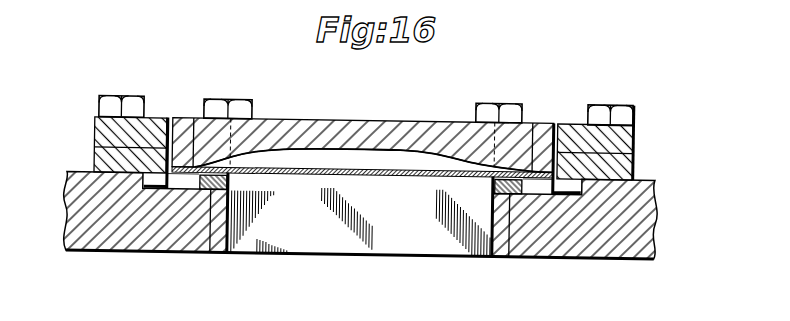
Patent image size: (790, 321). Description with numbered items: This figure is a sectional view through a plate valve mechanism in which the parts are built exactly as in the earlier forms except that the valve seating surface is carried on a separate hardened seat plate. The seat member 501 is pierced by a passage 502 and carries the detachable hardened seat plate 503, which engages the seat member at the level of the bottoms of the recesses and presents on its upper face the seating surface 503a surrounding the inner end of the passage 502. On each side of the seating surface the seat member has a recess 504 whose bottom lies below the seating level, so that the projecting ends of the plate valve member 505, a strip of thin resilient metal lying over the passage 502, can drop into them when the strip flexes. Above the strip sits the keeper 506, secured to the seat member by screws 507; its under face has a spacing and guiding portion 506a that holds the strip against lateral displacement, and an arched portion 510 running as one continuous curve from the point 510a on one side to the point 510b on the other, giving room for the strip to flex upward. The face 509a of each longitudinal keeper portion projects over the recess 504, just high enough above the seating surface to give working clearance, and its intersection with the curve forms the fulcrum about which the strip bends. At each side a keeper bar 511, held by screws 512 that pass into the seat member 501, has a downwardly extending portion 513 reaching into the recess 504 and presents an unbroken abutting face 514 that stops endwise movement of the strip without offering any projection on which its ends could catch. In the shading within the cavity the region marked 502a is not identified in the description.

The seat member 501 is at (80, 199).
The passage 502 is at (328, 246).
The cavity wall shading 502a is at (433, 188).
The seat plate 503 is at (211, 252).
The seating surface 503a is at (232, 192).
The recess 504 is at (183, 180).
The plate valve member 505 is at (390, 185).
The keeper 506 is at (368, 126).
The spacing and guiding portion 506a is at (238, 160).
The screw 507 is at (240, 104).
The face 509a is at (171, 117).
The arched portion 510 is at (332, 126).
The end point of curved face 510a is at (195, 130).
The end point of curved face 510b is at (522, 125).
The keeper bar 511 is at (100, 125).
The screw 512 is at (125, 103).
The downwardly extending portion 513 is at (158, 178).
The abutting face 514 is at (130, 152).